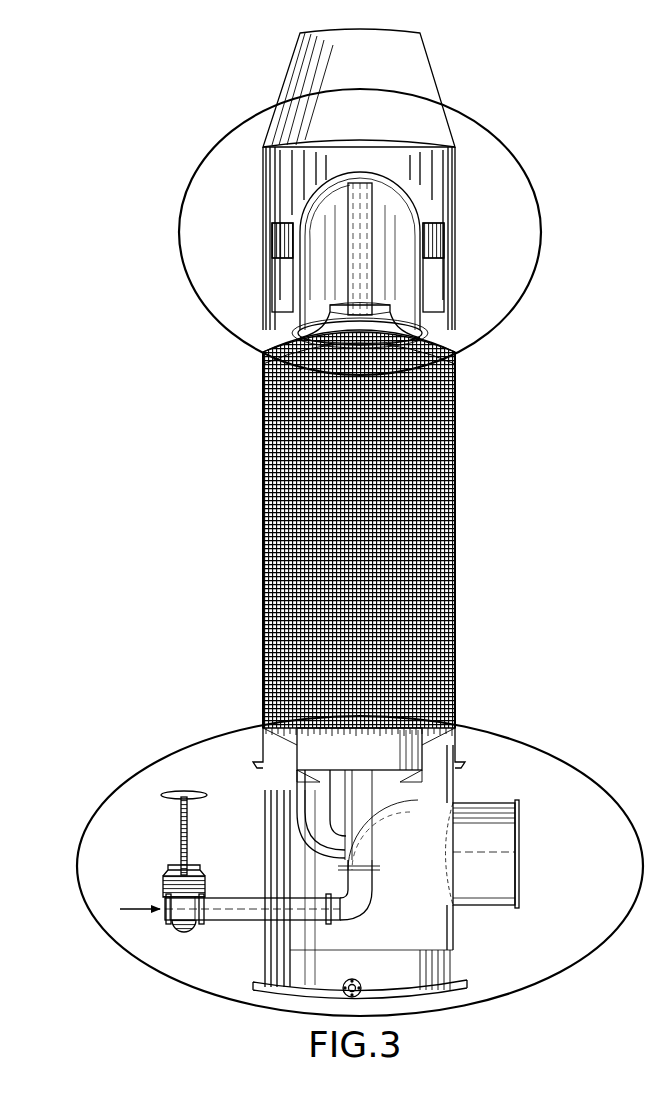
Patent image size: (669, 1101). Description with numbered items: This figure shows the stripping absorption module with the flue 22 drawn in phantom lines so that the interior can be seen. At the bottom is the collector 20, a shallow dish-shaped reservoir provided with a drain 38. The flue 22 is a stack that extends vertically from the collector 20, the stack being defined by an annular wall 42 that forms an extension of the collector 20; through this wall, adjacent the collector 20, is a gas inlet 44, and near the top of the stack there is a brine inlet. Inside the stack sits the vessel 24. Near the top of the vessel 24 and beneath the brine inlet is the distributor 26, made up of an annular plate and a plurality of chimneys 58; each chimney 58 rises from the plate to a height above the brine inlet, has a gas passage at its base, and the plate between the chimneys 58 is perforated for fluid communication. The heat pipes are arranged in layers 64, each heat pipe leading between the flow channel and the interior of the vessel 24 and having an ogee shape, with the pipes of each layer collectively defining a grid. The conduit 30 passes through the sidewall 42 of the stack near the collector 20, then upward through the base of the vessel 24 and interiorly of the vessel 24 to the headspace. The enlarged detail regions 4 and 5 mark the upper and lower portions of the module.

The upper portion detail 4 is at (522, 298).
The lower portion detail 5 is at (112, 790).
The collector 20 is at (478, 962).
The flue 22 is at (275, 182).
The vessel 24 is at (420, 192).
The distributor 26 is at (468, 274).
The conduit 30 is at (367, 808).
The drain 38 is at (342, 988).
The annular wall 42 is at (268, 320).
The gas inlet 44 is at (538, 883).
The chimneys 58 is at (265, 273).
The layers 64 is at (260, 456).